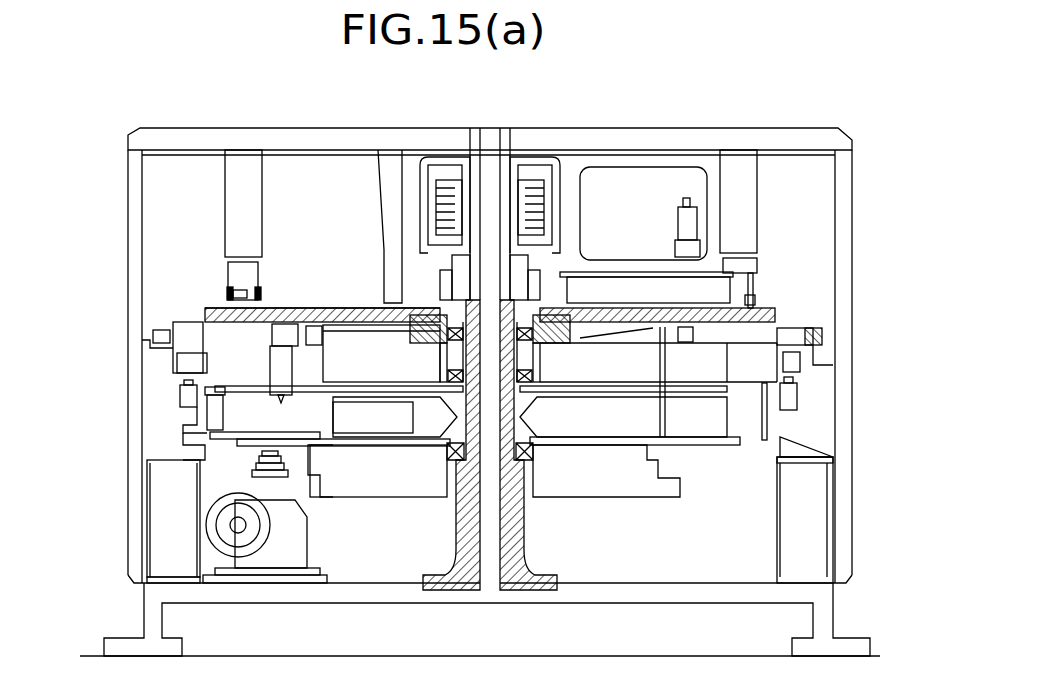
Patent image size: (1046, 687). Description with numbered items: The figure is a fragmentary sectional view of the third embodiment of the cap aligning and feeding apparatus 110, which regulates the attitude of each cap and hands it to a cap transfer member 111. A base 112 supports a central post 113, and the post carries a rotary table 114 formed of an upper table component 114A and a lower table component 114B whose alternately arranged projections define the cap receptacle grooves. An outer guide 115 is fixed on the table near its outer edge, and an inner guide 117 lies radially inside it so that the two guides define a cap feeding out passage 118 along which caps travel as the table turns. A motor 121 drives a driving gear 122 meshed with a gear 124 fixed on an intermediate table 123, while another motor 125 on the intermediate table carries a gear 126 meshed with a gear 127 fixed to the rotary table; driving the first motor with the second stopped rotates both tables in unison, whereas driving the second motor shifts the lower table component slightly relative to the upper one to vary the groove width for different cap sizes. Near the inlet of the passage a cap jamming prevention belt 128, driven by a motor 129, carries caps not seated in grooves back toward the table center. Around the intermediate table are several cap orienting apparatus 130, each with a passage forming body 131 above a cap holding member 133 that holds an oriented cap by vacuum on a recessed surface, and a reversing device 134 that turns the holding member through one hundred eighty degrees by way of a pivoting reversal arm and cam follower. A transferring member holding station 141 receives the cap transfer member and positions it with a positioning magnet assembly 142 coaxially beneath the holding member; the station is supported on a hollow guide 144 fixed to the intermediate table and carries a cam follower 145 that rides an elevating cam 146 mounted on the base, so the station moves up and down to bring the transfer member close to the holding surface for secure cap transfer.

The cap aligning and feeding apparatus 110 is at (705, 118).
The cap transfer member 111 is at (183, 378).
The base 112 is at (150, 603).
The central post 113 is at (456, 531).
The rotary table 114 is at (376, 306).
The upper table component 114A is at (333, 306).
The lower table component 114B is at (550, 355).
The outer guide 115 is at (228, 298).
The inner guide 117 is at (260, 297).
The cap feeding out passage 118 is at (240, 292).
The motor 121 is at (305, 545).
The driving gear 122 is at (295, 497).
The intermediate table 123 is at (412, 445).
The gear 124 is at (316, 475).
The motor 125 is at (281, 400).
The gear 126 is at (283, 323).
The gear 127 is at (320, 336).
The cap jamming prevention belt 128 is at (615, 290).
The motor 129 is at (678, 217).
The cap orienting apparatus 130 is at (160, 318).
The passage forming body 131 is at (190, 321).
The cap holding member 133 is at (188, 368).
The reversing device 134 is at (153, 338).
The transferring member holding station 141 is at (185, 400).
The positioning magnet assembly 142 is at (197, 424).
The hollow guide 144 is at (236, 410).
The cam follower 145 is at (200, 437).
The elevating cam 146 is at (207, 478).